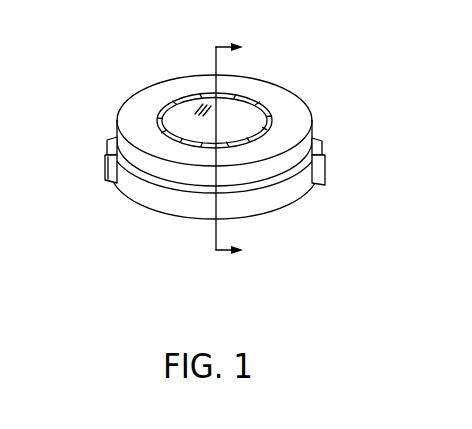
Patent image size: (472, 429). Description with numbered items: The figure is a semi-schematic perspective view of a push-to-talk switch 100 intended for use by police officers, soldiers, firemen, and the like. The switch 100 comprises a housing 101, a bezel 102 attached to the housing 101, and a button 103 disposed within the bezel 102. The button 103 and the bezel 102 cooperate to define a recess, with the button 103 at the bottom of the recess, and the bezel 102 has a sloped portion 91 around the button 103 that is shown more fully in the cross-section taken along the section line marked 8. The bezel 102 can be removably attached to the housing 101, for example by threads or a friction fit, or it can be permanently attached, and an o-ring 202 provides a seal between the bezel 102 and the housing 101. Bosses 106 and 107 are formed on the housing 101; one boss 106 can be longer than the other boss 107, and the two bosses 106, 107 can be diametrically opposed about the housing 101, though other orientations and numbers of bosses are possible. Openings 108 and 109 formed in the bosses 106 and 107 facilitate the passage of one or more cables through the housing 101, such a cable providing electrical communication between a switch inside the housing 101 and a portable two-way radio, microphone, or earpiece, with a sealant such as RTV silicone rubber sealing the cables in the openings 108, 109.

The push-to-talk switch 100 is at (208, 163).
The housing 101 is at (242, 224).
The bezel 102 is at (262, 80).
The button 103 is at (187, 104).
The sloped portion 91 is at (167, 147).
The boss 106 is at (320, 139).
The boss 107 is at (108, 183).
The opening 108 is at (326, 170).
The opening 109 is at (106, 159).
The o-ring 202 is at (310, 183).
The section line 8- 8 is at (237, 150).